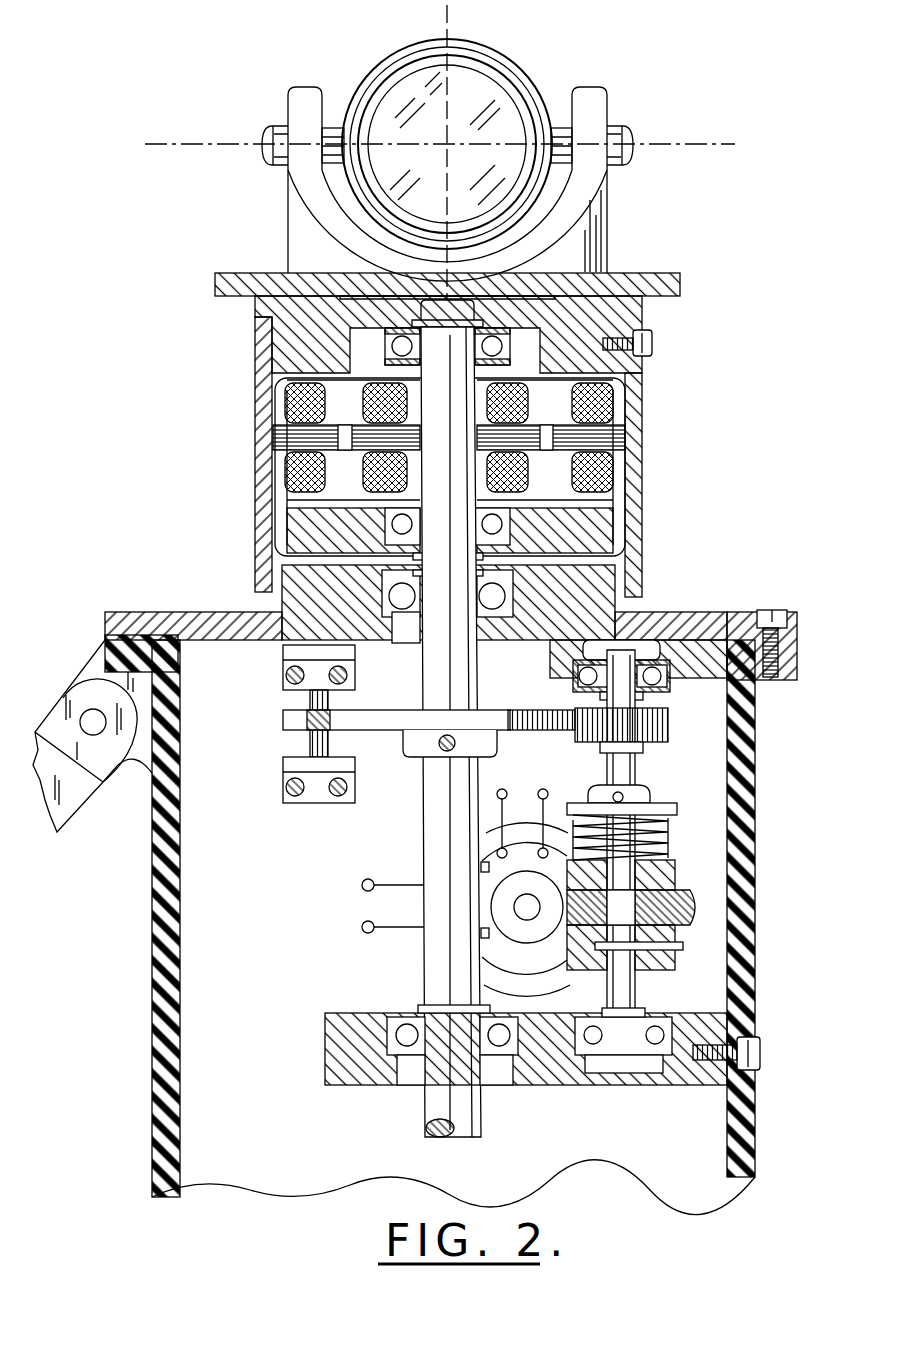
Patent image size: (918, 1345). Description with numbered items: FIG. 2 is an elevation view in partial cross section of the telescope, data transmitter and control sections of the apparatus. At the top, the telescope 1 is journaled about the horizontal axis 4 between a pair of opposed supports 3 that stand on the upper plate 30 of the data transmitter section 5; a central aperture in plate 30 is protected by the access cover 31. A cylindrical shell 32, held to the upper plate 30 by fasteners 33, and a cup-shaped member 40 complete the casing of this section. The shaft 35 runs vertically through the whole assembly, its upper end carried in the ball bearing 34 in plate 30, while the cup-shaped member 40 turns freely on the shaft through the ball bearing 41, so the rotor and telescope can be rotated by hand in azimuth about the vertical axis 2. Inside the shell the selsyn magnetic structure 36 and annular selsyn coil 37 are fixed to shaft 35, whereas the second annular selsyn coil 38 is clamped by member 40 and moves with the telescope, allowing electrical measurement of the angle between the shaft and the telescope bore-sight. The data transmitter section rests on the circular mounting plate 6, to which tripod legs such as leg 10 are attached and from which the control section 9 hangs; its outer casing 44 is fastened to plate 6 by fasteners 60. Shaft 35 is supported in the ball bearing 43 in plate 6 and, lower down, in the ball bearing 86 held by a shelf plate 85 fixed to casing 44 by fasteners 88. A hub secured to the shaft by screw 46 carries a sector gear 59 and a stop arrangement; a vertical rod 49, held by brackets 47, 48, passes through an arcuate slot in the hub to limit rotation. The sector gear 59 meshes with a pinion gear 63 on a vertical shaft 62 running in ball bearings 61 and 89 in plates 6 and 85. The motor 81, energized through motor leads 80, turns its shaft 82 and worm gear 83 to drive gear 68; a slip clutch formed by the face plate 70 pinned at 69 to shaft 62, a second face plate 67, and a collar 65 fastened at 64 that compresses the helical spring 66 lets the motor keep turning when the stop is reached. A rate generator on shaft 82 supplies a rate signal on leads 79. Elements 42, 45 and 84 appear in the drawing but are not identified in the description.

The telescope 1 is at (516, 64).
The vertical axis 2 is at (447, 22).
The supports 3 is at (608, 105).
The horizontal axis 4 is at (688, 146).
The data transmitter section 5 is at (452, 445).
The mounting plate 6 is at (797, 632).
The control section 9 is at (768, 748).
The tripod leg 10 is at (88, 805).
The upper plate 30 is at (632, 275).
The access cover 31 is at (434, 273).
The cylindrical shell 32 is at (256, 388).
The fasteners 33 is at (653, 342).
The ball bearing 34 is at (505, 330).
The shaft 35 is at (425, 316).
The magnetic structure 36 is at (470, 440).
The annular selsyn coil 37 is at (530, 421).
The annular selsyn coil 38 is at (632, 393).
The cup-shaped member 40 is at (640, 525).
The ball bearing 41 is at (421, 538).
The bearing block 42 is at (292, 602).
The ball bearing 43 is at (401, 635).
The outer casing 44 is at (152, 968).
The worm shaft bar 45 is at (400, 712).
The screw 46 is at (420, 758).
The bracket 47 is at (283, 650).
The bracket 48 is at (283, 762).
The vertical rod 49 is at (308, 746).
The sector gear 59 is at (556, 740).
The fasteners 60 is at (766, 611).
The ball bearing 61 is at (573, 686).
The vertical shaft 62 is at (643, 703).
The pinion gear 63 is at (668, 728).
The collar fastening 64 is at (623, 797).
The collar 65 is at (677, 808).
The helical spring 66 is at (670, 841).
The second face plate 67 is at (675, 870).
The gear 68 is at (695, 905).
The pin 69 is at (684, 945).
The face plate 70 is at (686, 966).
The leads 79 is at (360, 866).
The motor leads 80 is at (554, 793).
The motor 81 is at (483, 868).
The motor shaft 82 is at (514, 906).
The worm gear 83 is at (480, 934).
The disc 84 is at (565, 1005).
The shelf plate 85 is at (325, 1046).
The ball bearing 86 is at (412, 1005).
The fasteners 88 is at (762, 1049).
The ball bearing 89 is at (600, 1086).